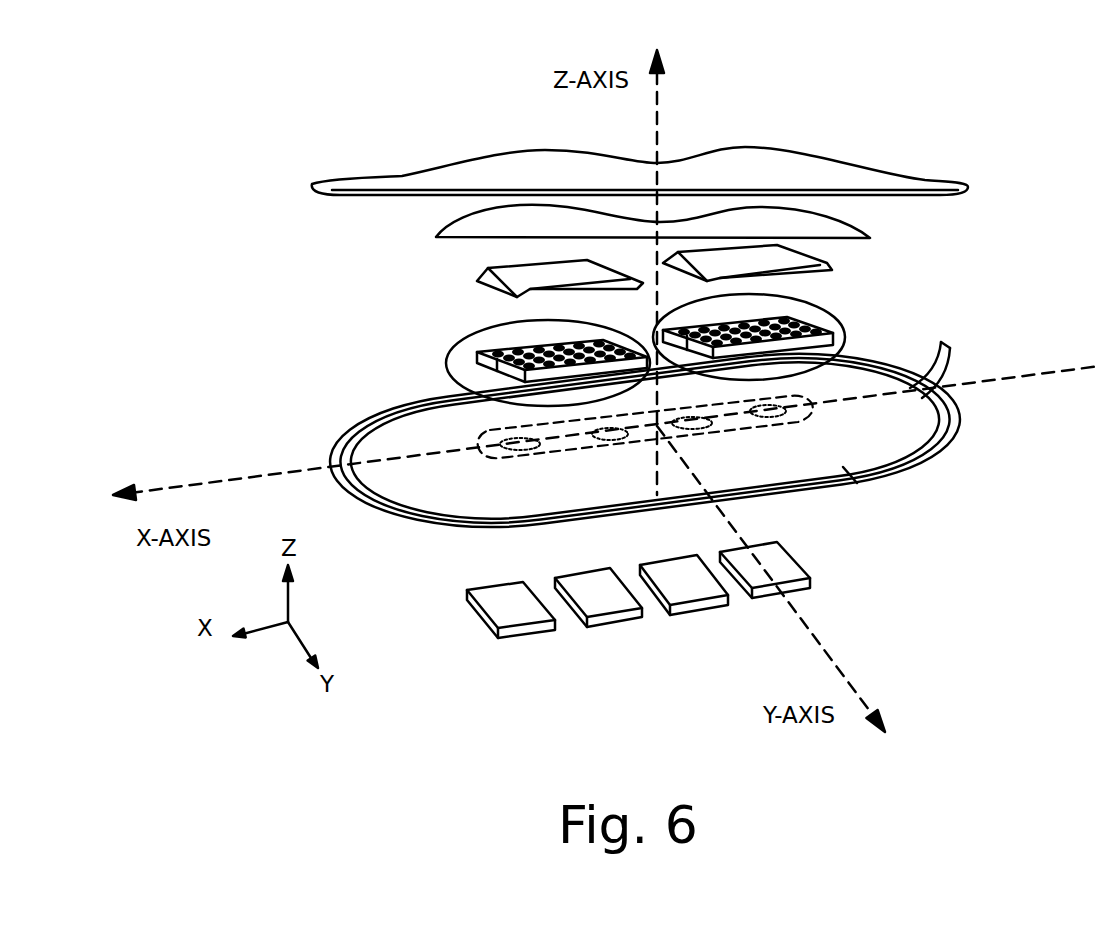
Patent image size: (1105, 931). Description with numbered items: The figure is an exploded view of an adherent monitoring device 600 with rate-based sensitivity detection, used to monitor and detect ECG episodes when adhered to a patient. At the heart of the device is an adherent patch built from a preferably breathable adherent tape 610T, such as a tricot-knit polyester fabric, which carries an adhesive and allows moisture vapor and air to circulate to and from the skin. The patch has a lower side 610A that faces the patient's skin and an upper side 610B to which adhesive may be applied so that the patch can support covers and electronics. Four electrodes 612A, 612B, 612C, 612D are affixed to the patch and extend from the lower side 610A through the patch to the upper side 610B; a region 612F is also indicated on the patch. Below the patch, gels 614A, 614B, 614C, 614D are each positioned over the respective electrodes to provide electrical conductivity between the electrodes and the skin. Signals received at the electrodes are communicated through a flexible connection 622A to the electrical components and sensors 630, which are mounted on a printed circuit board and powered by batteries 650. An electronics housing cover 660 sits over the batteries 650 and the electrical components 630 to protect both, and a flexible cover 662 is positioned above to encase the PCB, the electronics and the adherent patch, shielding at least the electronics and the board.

The monitoring device 600 is at (769, 103).
The flexible cover 662 is at (400, 173).
The electronics housing cover 660 is at (447, 220).
The batteries 650 is at (488, 283).
The electrical components/sensors 630 is at (520, 328).
The flexible connection 622A is at (932, 343).
The lower side 610A is at (453, 533).
The adherent tape 610T is at (364, 496).
The upper side 610B is at (903, 461).
The sensor region outline 612F is at (483, 440).
The electrode 612A is at (525, 452).
The electrode 612B is at (606, 441).
The electrode 612C is at (703, 429).
The electrode 612D is at (780, 418).
The gel 614A is at (532, 636).
The gel 614B is at (620, 621).
The gel 614C is at (712, 607).
The gel 614D is at (812, 588).